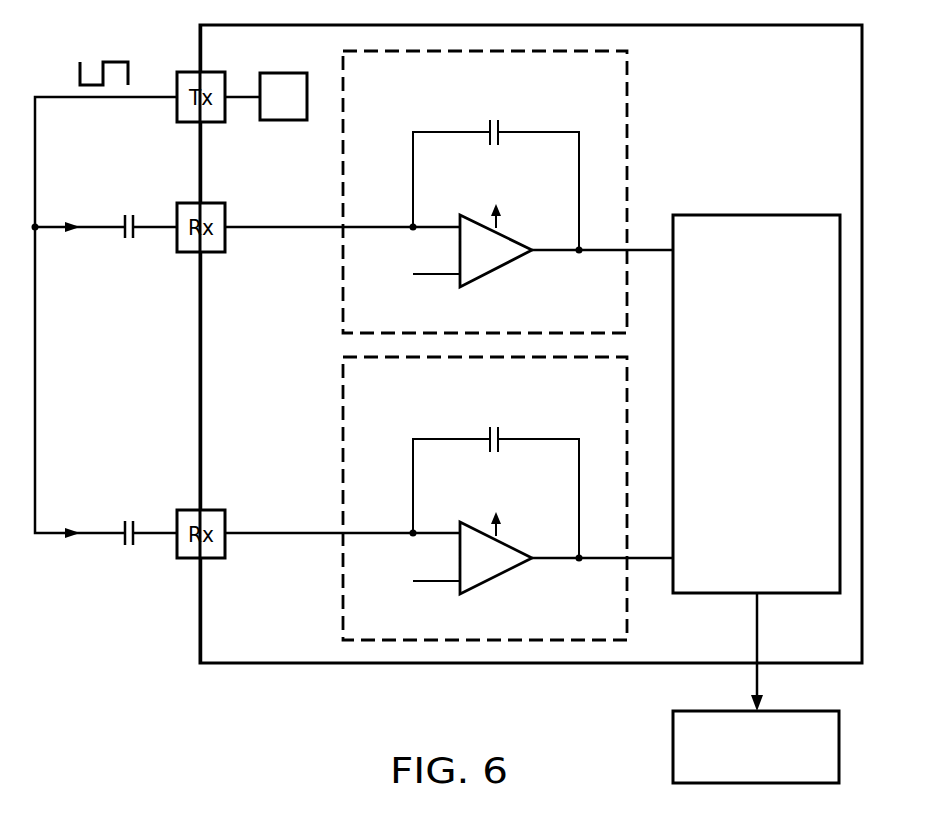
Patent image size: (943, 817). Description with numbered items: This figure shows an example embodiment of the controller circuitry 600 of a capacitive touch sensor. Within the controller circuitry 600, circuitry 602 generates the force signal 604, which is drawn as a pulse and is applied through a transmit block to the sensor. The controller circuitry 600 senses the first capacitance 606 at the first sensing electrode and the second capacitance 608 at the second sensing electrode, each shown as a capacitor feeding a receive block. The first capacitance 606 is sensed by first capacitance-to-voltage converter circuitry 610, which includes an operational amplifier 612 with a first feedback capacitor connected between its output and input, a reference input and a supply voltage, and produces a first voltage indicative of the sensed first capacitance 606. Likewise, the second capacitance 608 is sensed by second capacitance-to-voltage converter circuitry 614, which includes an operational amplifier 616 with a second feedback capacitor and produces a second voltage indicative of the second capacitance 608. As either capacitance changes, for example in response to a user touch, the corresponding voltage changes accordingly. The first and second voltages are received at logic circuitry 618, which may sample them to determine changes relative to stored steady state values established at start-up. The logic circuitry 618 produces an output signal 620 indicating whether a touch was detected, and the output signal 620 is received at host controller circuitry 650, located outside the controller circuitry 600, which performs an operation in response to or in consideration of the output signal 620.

The controller circuitry 600 is at (767, 170).
The circuitry for generating the force signal 602 is at (283, 122).
The force signal 604 is at (107, 100).
The first capacitance 606 is at (130, 240).
The second capacitance 608 is at (130, 547).
The first capacitance-to-voltage converter circuitry 610 is at (412, 102).
The operational amplifier 612 is at (497, 271).
The second capacitance-to-voltage converter circuitry 614 is at (412, 407).
The operational amplifier 616 is at (497, 578).
The logic circuitry 618 is at (778, 442).
The output signal 620 is at (757, 621).
The host controller circuitry 650 is at (839, 748).